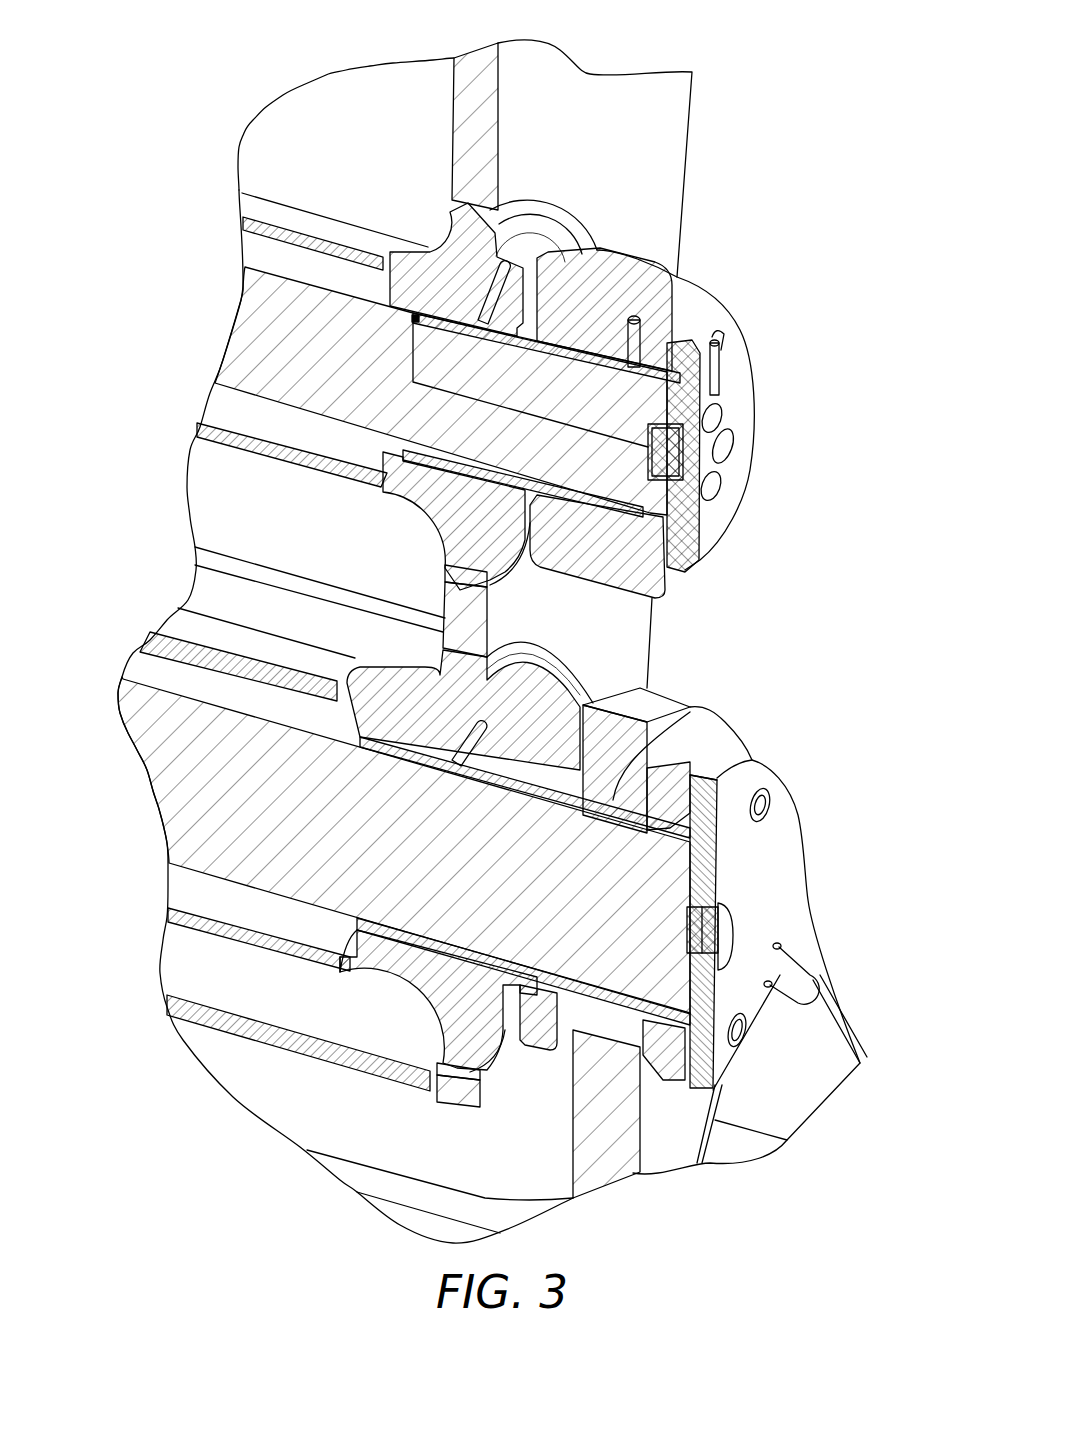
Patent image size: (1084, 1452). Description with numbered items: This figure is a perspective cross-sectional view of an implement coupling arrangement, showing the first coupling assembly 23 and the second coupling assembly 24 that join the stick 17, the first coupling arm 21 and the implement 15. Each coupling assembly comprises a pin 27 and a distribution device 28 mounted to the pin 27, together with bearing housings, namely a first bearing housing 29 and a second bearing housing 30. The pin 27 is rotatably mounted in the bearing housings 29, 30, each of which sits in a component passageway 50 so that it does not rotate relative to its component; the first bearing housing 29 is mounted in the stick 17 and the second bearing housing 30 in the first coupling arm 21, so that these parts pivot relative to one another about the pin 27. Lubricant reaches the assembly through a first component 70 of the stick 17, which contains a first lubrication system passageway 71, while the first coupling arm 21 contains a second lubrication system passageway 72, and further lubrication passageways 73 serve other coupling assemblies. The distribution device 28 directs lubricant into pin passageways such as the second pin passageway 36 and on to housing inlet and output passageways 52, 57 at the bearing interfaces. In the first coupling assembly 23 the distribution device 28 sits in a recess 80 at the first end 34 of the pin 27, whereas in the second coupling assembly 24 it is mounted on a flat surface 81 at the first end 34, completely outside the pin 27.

The implement 15 is at (838, 1040).
The stick 17 is at (587, 85).
The first coupling arm 21 is at (565, 570).
The first coupling assembly 23 is at (784, 327).
The second coupling assembly 24 is at (792, 738).
The pin 27 is at (262, 340).
The distribution device 28 is at (683, 435).
The first bearing housing 29 is at (490, 338).
The second bearing housing 30 is at (575, 358).
The first end of the pin 34 is at (700, 993).
The second pin passageway 36 is at (433, 387).
The component passageway 50 is at (453, 465).
The housing inlet and/or output passageway 52 is at (403, 300).
The housing inlet and/or output passageway 57 is at (660, 392).
The first component 70 is at (546, 222).
The first lubrication system passageway 71 is at (448, 226).
The second lubrication system passageway 72 is at (690, 310).
The further lubrication passageway 73 is at (463, 740).
The recess 80 is at (697, 514).
The flat surface 81 is at (713, 880).